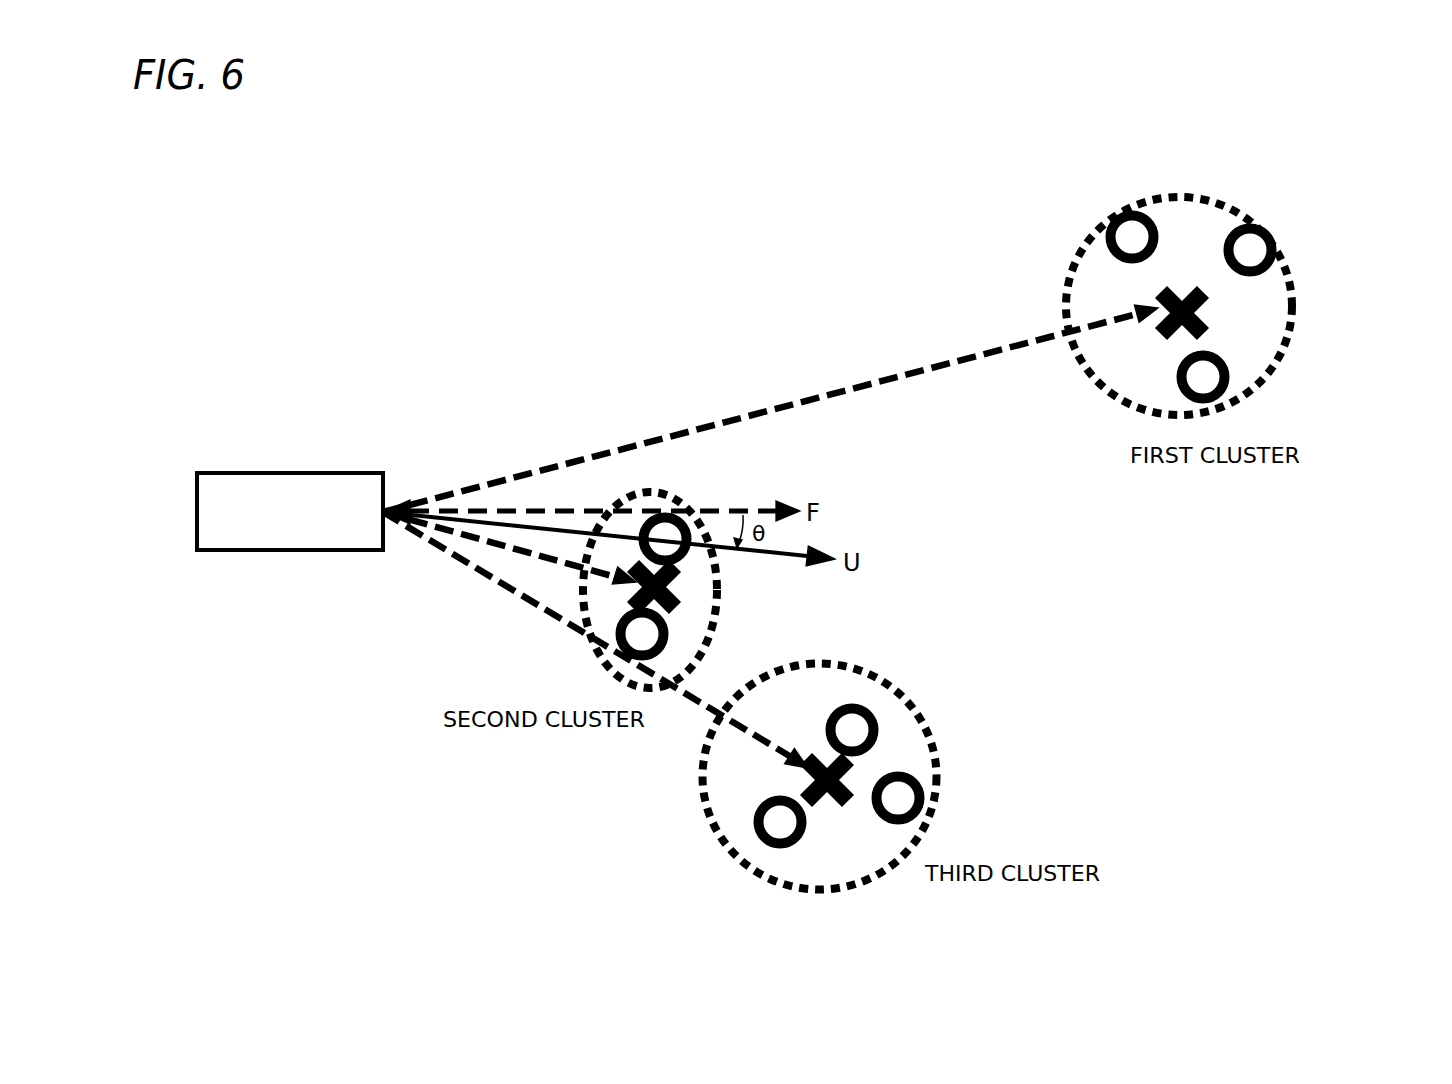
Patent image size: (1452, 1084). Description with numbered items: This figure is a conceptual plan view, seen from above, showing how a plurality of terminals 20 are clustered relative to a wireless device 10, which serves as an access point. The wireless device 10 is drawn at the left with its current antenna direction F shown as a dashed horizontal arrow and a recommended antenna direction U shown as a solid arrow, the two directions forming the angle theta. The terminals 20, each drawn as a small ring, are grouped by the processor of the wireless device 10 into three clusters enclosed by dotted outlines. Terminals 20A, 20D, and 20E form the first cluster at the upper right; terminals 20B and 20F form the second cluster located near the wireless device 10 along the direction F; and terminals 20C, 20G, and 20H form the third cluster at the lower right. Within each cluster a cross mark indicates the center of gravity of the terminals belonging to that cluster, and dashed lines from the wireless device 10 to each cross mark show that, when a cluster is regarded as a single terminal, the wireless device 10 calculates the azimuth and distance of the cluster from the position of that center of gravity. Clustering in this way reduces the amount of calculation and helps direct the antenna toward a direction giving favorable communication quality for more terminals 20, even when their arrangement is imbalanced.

The wireless device 10 is at (347, 473).
The terminal 20 is at (1029, 526).
The terminal 20A is at (1274, 236).
The terminal 20B is at (692, 517).
The terminal 20C is at (918, 778).
The terminal 20D is at (1204, 368).
The terminal 20E is at (1130, 210).
The terminal 20F is at (668, 632).
The terminal 20G is at (876, 704).
The terminal 20H is at (781, 848).